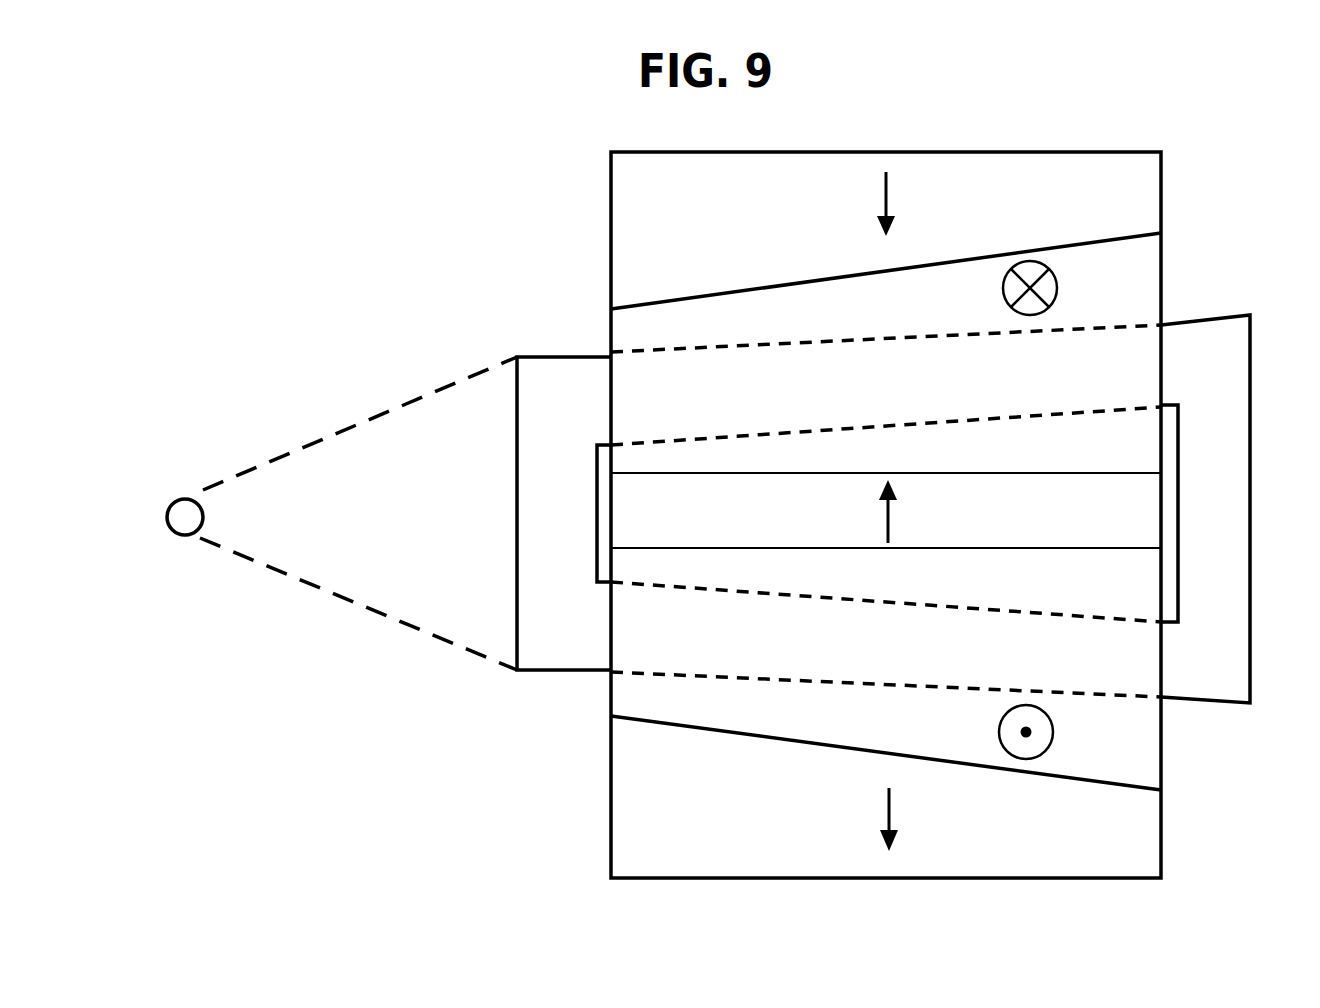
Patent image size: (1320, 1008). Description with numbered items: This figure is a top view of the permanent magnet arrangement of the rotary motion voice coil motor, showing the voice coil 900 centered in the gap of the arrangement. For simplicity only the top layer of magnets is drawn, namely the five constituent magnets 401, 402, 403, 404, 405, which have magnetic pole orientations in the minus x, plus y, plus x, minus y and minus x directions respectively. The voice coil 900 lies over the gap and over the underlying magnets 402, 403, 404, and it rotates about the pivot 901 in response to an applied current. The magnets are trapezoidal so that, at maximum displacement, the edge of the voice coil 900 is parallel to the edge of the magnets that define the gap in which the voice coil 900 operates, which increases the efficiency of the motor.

The magnet 401 is at (1147, 857).
The magnet 402 is at (1147, 756).
The magnet 403 is at (1147, 527).
The magnet 404 is at (1145, 287).
The magnet 405 is at (1145, 197).
The voice coil 900 is at (1227, 374).
The pivot 901 is at (183, 513).